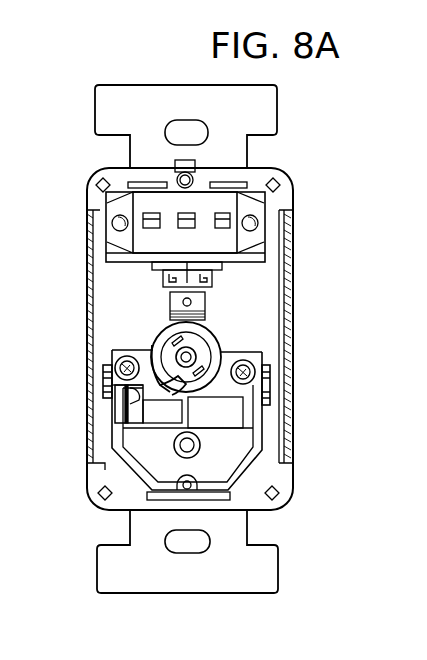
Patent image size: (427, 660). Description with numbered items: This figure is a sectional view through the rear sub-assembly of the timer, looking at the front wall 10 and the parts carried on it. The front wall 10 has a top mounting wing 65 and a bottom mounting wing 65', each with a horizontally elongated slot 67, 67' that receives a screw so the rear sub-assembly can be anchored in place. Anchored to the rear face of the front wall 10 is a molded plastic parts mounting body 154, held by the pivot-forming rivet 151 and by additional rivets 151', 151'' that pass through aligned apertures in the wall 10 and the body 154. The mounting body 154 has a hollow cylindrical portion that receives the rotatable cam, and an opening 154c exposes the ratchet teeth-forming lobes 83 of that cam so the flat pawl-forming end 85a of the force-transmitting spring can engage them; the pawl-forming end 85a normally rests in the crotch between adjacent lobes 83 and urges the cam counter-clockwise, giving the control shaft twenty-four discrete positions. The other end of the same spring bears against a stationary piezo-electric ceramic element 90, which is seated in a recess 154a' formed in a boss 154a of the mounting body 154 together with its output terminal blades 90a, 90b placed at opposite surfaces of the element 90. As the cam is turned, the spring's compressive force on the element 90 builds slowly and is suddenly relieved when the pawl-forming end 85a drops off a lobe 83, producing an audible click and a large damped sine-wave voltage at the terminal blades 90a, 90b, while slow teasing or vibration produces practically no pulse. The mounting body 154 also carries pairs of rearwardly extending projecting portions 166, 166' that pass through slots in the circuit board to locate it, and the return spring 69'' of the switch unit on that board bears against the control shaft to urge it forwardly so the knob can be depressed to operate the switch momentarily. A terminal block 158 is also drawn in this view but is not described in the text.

The front wall 10 is at (100, 288).
The top mounting wing 65 is at (207, 126).
The slot 67 is at (169, 104).
The bottom mounting wing 65' is at (209, 551).
The slot 67' is at (169, 573).
The terminal block 158 is at (228, 238).
The parts mounting body 154 is at (123, 470).
The boss 154a is at (214, 351).
The recess 154a' is at (73, 404).
The opening 154c is at (168, 358).
The return spring 69'' is at (219, 348).
The pivot-forming rivet 151 is at (254, 445).
The rivet 151' is at (287, 364).
The rivet 151'' is at (82, 354).
The rearwardly extending projecting portion 166 is at (308, 385).
The rearwardly extending projecting portion 166' is at (65, 376).
The piezo-electric ceramic element 90 is at (126, 414).
The output terminal blade 90a is at (132, 422).
The output terminal blade 90b is at (108, 393).
The pawl-forming end 85a is at (162, 411).
The ratchet teeth-forming lobe 83 is at (192, 403).